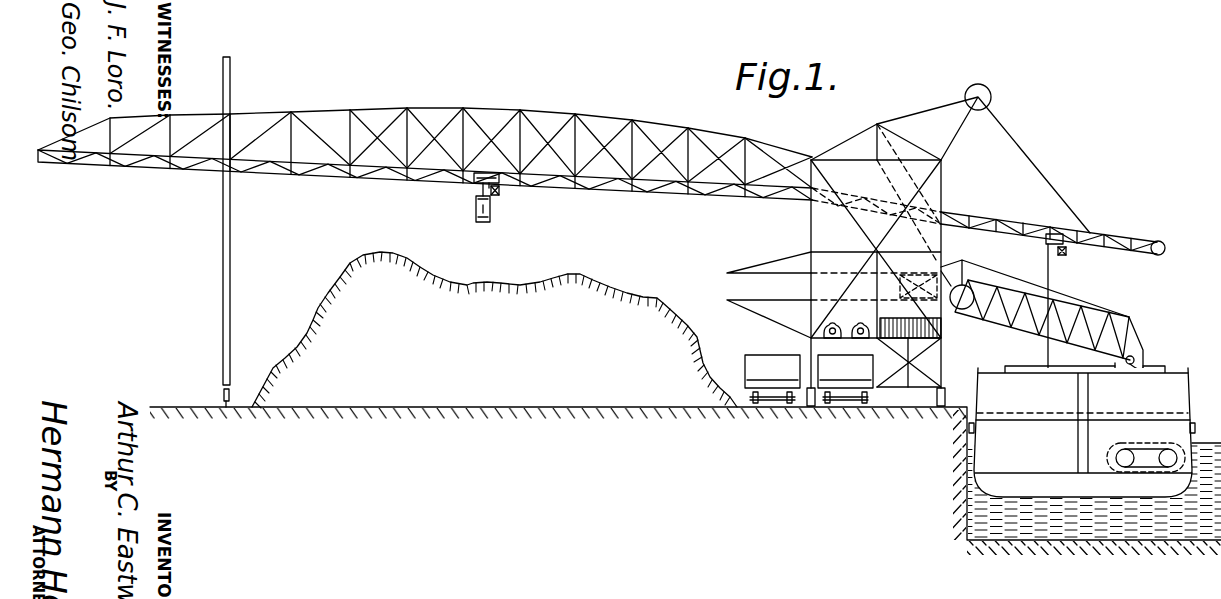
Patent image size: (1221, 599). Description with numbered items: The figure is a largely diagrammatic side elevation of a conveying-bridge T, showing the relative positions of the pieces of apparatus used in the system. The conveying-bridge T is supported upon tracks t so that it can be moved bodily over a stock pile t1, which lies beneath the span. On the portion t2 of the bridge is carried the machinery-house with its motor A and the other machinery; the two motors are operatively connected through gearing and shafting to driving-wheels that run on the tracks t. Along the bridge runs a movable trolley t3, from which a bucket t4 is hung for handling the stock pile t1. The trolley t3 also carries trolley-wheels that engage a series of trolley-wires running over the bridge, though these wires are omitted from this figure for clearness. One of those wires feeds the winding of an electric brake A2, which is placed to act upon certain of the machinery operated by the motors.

The conveying-bridge T is at (601, 181).
The tracks t is at (580, 251).
The stock pile t1 is at (651, 298).
The portion of the bridge carrying the machinery-house t2 is at (928, 245).
The movable trolley t3 is at (492, 165).
The bucket t4 is at (478, 218).
The motor A is at (834, 325).
The electric brake A2 is at (859, 323).